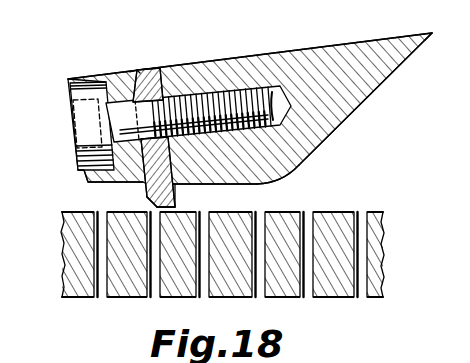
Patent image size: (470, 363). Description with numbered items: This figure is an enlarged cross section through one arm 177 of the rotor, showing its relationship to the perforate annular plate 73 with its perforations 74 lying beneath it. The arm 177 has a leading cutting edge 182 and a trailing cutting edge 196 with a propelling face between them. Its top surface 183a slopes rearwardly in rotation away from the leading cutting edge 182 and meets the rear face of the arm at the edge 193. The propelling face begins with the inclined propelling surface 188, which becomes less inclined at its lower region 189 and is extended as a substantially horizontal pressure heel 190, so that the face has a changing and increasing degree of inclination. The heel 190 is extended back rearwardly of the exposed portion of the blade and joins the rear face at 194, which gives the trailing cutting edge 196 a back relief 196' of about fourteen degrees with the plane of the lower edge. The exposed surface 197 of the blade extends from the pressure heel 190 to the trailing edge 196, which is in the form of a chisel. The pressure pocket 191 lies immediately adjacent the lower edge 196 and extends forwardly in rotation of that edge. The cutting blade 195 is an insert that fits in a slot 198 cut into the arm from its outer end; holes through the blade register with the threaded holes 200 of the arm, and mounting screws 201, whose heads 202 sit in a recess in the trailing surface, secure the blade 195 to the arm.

The arm 177 is at (401, 85).
The leading cutting edge 182 is at (432, 33).
The top surface 183a is at (189, 57).
The propelling surface 188 is at (355, 115).
The lower region 189 is at (285, 182).
The pressure pocket 191 is at (258, 200).
The pressure heel 190 is at (181, 197).
The edge 193 is at (68, 79).
The junction 194 is at (82, 176).
The screw heads 202 is at (76, 125).
The threaded holes 200 is at (284, 88).
The mounting screws 201 is at (247, 100).
The cutting blade 195 is at (152, 72).
The slot 198 is at (135, 70).
The trailing cutting edge 196 is at (127, 172).
The back relief 196' is at (127, 261).
The exposed surface 197 is at (181, 208).
The perforate annular plate 73 is at (243, 272).
The perforations 74 is at (364, 291).